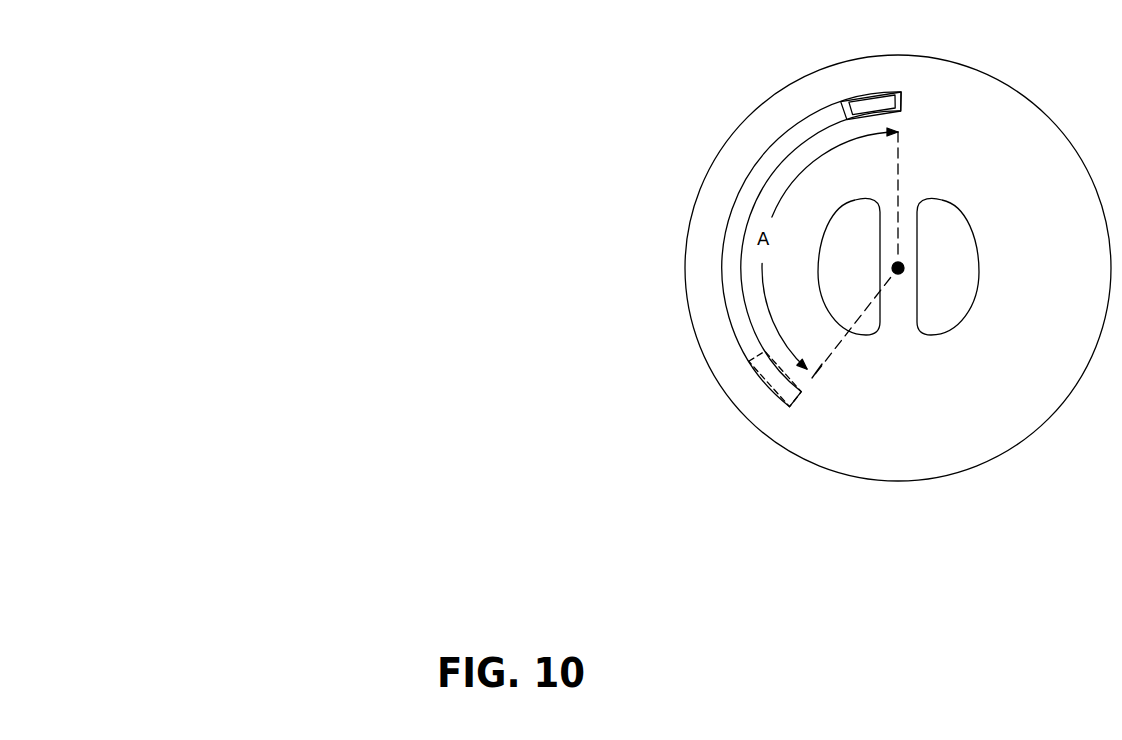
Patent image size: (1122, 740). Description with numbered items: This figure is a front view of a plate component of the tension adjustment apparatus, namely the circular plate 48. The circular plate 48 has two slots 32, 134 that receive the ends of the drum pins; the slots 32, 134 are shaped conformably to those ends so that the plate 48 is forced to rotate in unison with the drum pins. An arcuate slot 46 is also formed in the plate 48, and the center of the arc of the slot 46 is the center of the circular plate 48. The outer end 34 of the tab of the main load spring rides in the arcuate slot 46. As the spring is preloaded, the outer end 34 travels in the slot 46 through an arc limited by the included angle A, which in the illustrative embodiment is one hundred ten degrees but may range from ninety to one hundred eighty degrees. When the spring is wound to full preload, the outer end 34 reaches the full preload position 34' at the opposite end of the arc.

The circular plate 48 is at (670, 255).
The arcuate slot 46 is at (770, 168).
The outer end 34 is at (859, 64).
The full preload position 34' is at (747, 419).
The slot 134 is at (862, 318).
The slot 32 is at (943, 307).